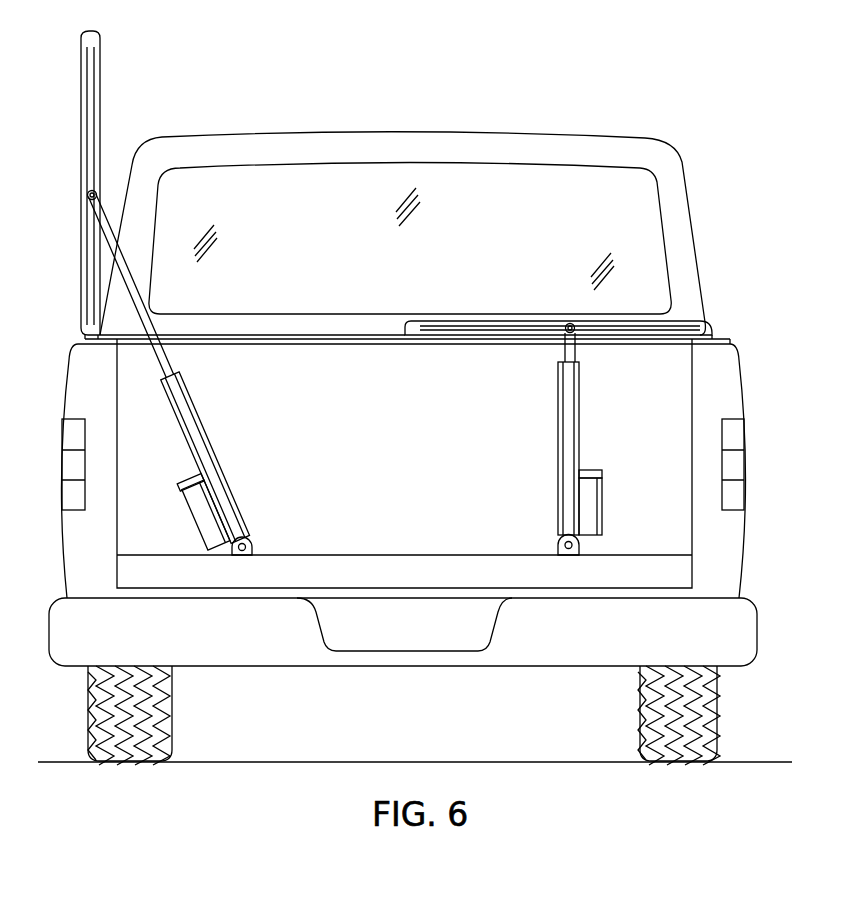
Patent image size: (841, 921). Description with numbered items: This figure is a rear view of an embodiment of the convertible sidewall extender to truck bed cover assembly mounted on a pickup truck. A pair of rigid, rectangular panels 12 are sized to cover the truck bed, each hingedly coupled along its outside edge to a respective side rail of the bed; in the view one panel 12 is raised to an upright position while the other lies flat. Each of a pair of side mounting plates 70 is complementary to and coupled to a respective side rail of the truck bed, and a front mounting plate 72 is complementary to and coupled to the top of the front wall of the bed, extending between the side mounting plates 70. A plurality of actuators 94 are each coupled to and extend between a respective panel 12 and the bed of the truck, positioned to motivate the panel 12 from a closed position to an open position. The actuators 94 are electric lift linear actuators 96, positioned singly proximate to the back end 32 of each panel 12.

The panel 12 is at (81, 122).
The back end 32 is at (86, 136).
The side mounting plate 70 is at (726, 332).
The front mounting plate 72 is at (342, 342).
The actuator 94 is at (558, 505).
The electric lift linear actuator 96 is at (582, 447).